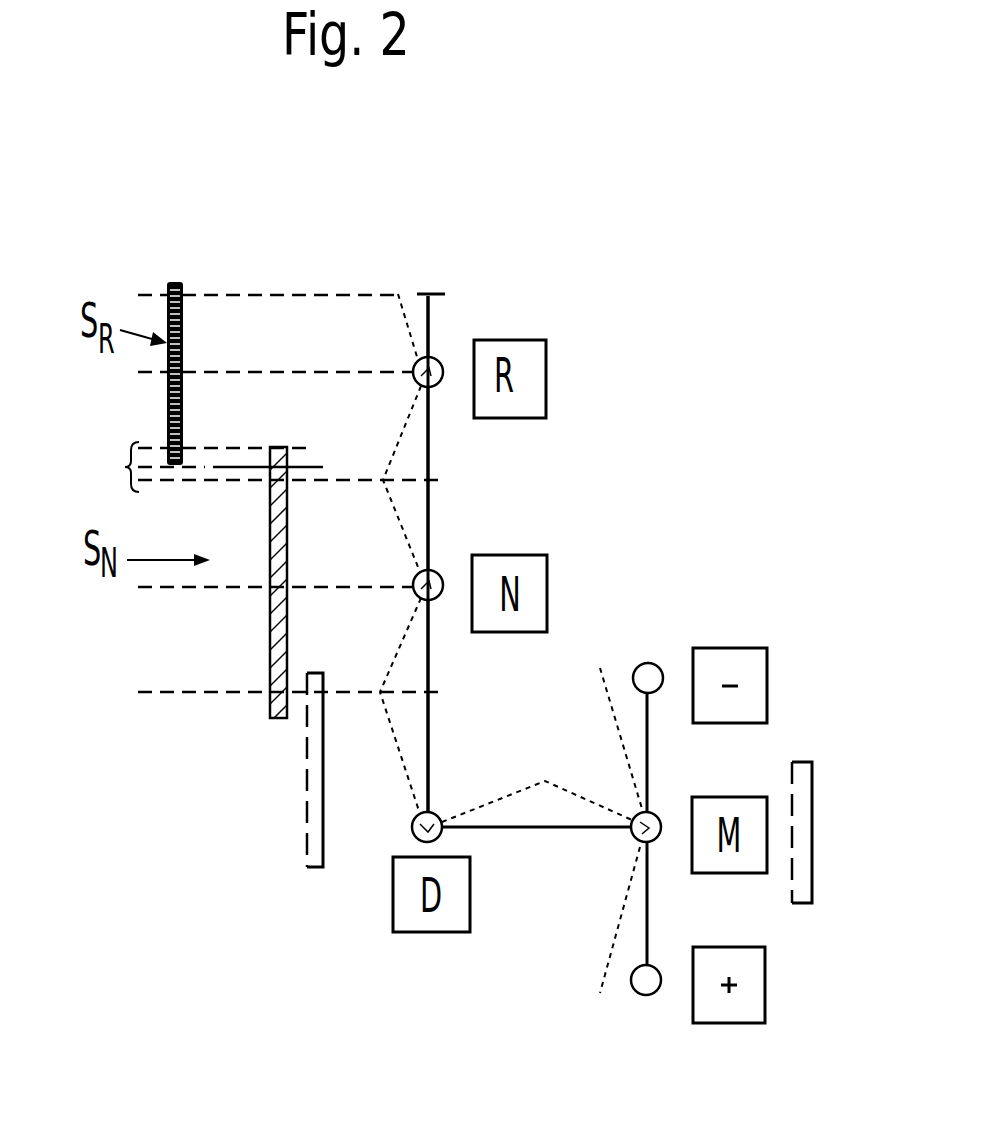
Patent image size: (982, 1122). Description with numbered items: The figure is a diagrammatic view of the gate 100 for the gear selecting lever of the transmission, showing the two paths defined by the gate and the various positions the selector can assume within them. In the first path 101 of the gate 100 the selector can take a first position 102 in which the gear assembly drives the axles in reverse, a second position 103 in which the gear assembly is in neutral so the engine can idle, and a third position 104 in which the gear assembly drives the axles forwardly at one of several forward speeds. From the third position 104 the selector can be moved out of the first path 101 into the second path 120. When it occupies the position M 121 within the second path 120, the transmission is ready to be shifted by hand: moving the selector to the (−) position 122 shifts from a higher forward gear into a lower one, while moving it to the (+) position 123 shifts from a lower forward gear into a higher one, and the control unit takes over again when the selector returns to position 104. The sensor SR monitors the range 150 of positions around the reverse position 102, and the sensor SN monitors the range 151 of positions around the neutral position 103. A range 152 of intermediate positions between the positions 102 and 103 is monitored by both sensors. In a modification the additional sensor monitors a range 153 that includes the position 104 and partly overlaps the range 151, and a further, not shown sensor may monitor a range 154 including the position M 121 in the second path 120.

The gate 100 is at (494, 228).
The first path 101 is at (428, 323).
The first position 102 is at (499, 334).
The second position 103 is at (438, 575).
The third position 104 is at (413, 823).
The second path 120 is at (648, 750).
The position M 121 is at (640, 840).
The (−) position 122 is at (643, 667).
The (+) position 123 is at (647, 982).
The range of further sensor 150 is at (175, 283).
The range of additional sensor 151 is at (270, 640).
The range of intermediate positions 152 is at (114, 462).
The range of positions 153 is at (308, 753).
The range of positions 154 is at (803, 825).